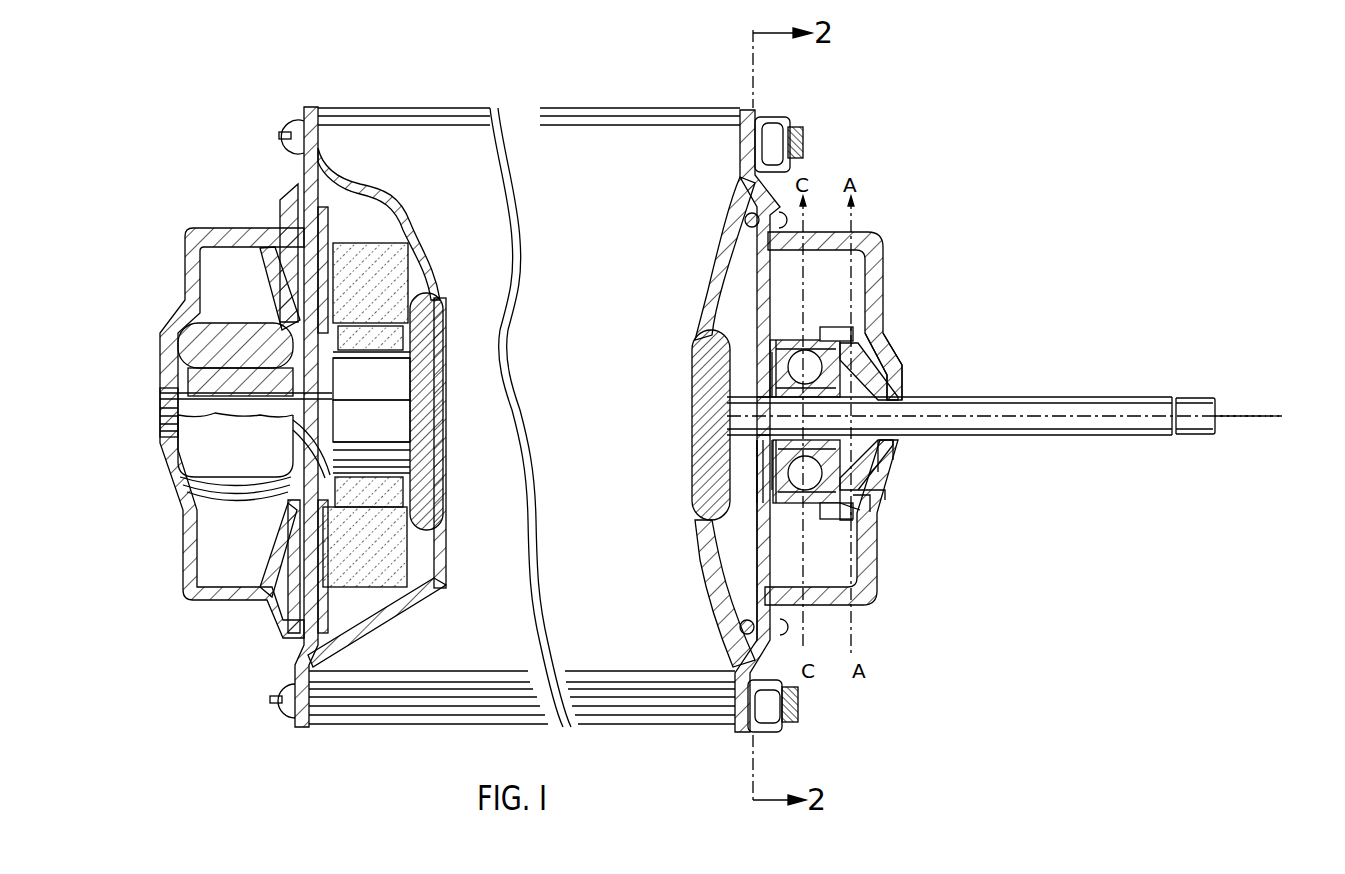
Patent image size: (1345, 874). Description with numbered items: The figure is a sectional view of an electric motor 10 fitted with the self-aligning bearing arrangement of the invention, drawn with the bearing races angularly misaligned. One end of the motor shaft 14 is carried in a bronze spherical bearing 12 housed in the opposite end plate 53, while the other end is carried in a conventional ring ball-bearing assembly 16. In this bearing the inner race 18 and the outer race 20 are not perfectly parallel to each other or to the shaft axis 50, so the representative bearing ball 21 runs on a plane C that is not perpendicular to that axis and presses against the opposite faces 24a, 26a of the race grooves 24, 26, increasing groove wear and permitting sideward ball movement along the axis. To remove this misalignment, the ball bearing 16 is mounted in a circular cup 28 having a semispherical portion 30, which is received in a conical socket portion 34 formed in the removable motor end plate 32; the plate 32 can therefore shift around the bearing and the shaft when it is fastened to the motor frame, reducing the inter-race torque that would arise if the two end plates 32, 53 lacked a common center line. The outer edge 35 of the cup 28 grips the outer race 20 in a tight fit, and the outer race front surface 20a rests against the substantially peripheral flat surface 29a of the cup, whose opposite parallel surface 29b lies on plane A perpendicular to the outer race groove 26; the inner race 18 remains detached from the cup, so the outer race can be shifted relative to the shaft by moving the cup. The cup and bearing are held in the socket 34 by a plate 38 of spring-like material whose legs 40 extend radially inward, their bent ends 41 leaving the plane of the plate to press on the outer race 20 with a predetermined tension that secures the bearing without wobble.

The electric motor 10 is at (649, 106).
The bronze spherical bearing 12 is at (190, 441).
The motor shaft 14 is at (1000, 396).
The ring ball-bearing assembly 16 is at (802, 506).
The inner race 18 is at (763, 389).
The outer race 20 is at (758, 342).
The outer race front surface 20a is at (860, 507).
The bearing ball 21 is at (803, 353).
The race groove 24 is at (886, 361).
The groove face 24a is at (776, 353).
The outer race groove 26 is at (805, 340).
The groove face 26a is at (779, 338).
The circular cup 28 is at (847, 519).
The peripheral flat surface 29a is at (867, 500).
The surface 29b is at (885, 495).
The semispherical portion 30 is at (893, 463).
The removable motor end plate 32 is at (884, 264).
The conical socket portion 34 is at (897, 473).
The outer edge 35 is at (852, 323).
The plate 38 is at (752, 556).
The legs 40 is at (760, 502).
The ends 41 is at (756, 456).
The shaft axis 50 is at (1283, 416).
The opposite end plate 53 is at (176, 544).